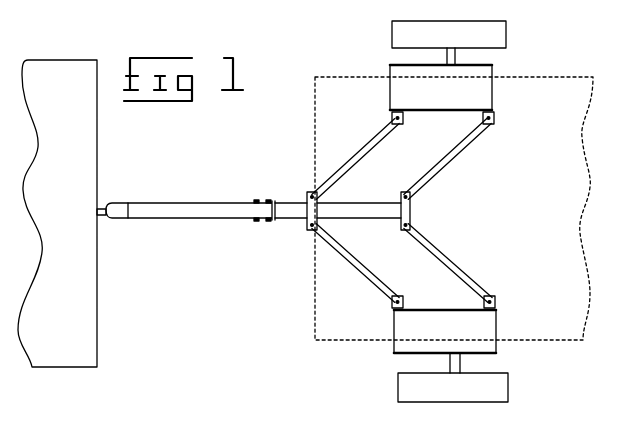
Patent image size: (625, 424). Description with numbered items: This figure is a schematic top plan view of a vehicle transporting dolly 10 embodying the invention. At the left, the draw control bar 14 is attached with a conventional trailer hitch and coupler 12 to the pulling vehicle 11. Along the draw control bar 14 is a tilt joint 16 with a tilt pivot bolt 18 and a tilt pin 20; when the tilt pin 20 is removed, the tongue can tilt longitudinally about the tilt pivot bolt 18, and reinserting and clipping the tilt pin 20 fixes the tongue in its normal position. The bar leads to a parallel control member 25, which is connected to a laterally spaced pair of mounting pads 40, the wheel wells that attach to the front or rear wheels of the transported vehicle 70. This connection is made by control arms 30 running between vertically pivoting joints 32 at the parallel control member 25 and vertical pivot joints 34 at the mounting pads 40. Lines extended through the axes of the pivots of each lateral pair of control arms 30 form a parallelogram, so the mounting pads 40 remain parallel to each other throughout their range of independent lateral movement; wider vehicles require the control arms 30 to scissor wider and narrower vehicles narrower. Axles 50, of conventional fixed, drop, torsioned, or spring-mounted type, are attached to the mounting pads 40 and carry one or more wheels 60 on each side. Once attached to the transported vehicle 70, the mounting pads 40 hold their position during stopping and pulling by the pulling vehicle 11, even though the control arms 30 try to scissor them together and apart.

The transporting dolly 10 is at (266, 177).
The pulling vehicle 11 is at (92, 268).
The trailer hitch and coupler 12 is at (122, 205).
The draw control bar 14 is at (221, 204).
The tilt joint 16 is at (275, 221).
The tilt pivot bolt 18 is at (256, 221).
The tilt pin 20 is at (268, 223).
The parallel control member 25 is at (356, 212).
The control arms 30 is at (400, 230).
The vertically pivoting joints 32 is at (305, 208).
The vertical pivot joints 34 is at (483, 115).
The mounting pads 40 is at (390, 93).
The axles 50 is at (447, 60).
The wheels 60 is at (392, 36).
The transported vehicle 70 is at (314, 302).